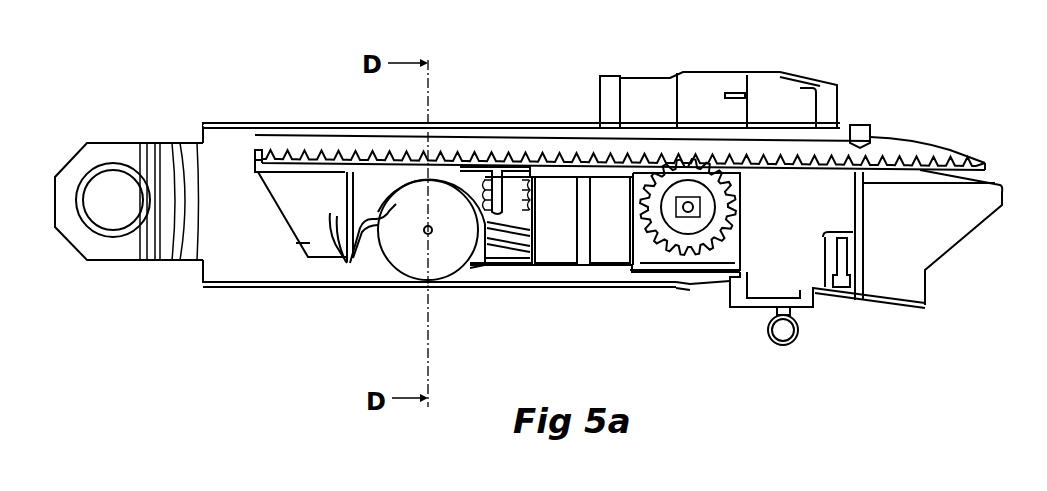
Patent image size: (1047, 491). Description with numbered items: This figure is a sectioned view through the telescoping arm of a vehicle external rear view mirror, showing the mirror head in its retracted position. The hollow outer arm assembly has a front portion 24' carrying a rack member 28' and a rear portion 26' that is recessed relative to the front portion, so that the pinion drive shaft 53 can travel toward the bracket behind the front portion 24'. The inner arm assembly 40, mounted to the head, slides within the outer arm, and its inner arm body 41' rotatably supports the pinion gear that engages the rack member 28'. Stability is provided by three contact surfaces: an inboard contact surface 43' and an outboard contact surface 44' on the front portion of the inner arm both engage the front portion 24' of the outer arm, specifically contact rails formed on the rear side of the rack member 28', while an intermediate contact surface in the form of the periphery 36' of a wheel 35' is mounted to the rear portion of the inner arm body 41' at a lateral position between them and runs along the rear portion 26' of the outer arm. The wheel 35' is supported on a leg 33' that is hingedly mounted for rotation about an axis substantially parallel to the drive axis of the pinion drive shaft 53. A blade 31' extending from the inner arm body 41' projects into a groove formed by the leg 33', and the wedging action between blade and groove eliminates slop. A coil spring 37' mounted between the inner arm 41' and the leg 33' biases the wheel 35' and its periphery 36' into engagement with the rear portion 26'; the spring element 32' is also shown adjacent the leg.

The front portion of the outer arm assembly 24' is at (722, 170).
The rear portion of the outer arm assembly 26' is at (536, 245).
The rack member 28' is at (687, 90).
The blade 31' is at (312, 250).
The spring 32' is at (309, 290).
The leg 33' is at (364, 286).
The wheel 35' is at (527, 222).
The wheel periphery 36' is at (460, 274).
The coil spring 37' is at (517, 167).
The inner arm assembly 40 is at (262, 213).
The inner arm body 41' is at (276, 250).
The inboard contact surface 43' is at (283, 124).
The outboard contact surface 44' is at (620, 101).
The pinion drive shaft 53 is at (675, 218).